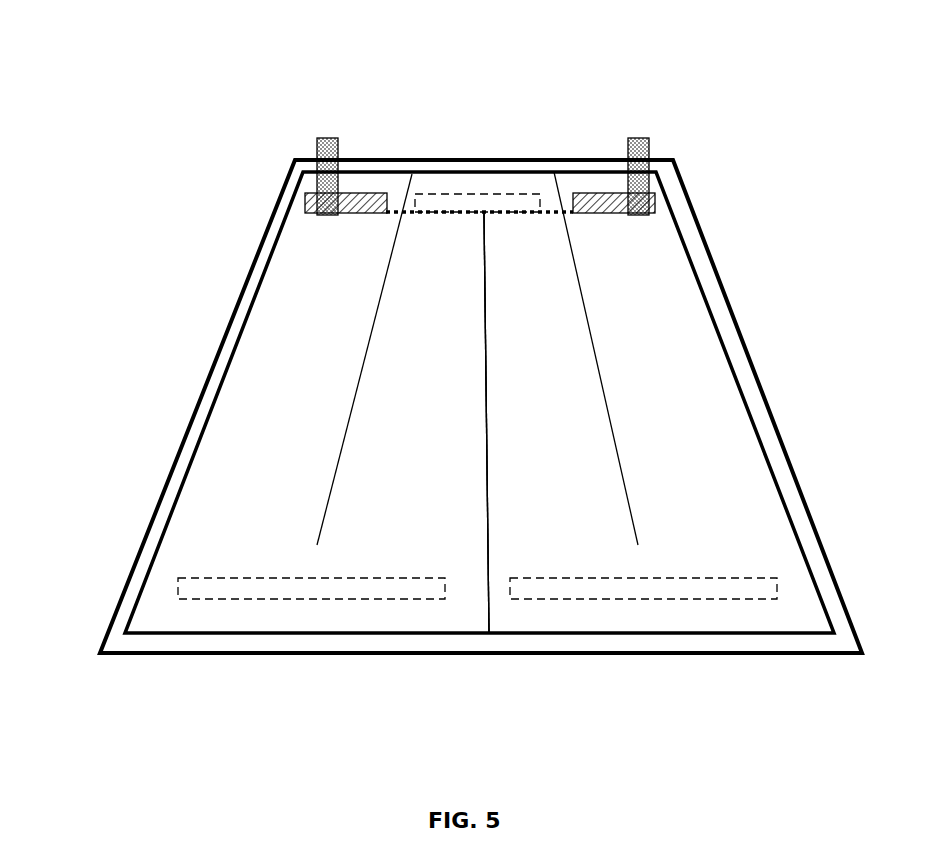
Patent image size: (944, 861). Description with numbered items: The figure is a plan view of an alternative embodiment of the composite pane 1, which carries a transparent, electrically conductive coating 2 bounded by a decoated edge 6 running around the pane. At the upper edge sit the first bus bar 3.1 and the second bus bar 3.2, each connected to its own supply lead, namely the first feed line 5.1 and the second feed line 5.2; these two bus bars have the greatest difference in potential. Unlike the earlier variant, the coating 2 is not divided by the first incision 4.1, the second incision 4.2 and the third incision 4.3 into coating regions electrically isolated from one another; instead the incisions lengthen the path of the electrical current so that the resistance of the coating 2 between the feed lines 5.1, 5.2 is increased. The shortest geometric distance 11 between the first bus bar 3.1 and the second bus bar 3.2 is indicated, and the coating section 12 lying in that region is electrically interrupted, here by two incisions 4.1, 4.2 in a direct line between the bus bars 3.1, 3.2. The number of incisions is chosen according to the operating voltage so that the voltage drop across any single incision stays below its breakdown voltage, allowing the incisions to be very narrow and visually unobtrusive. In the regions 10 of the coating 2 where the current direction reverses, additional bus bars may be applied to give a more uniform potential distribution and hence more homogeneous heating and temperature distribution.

The composite pane 1 is at (477, 117).
The coating 2 is at (252, 523).
The first bus bar with feed line 3.1 is at (320, 195).
The second bus bar with feed line 3.2 is at (595, 195).
The first incision 4.1 is at (348, 418).
The second incision 4.2 is at (475, 353).
The third incision 4.3 is at (606, 405).
The first feed line 5.1 is at (330, 165).
The second feed line 5.2 is at (640, 150).
The decoated edge 6 is at (648, 642).
The region for additional bus bars 10 is at (505, 190).
The shortest geometric distance 11 is at (560, 214).
The coating section 12 is at (398, 193).